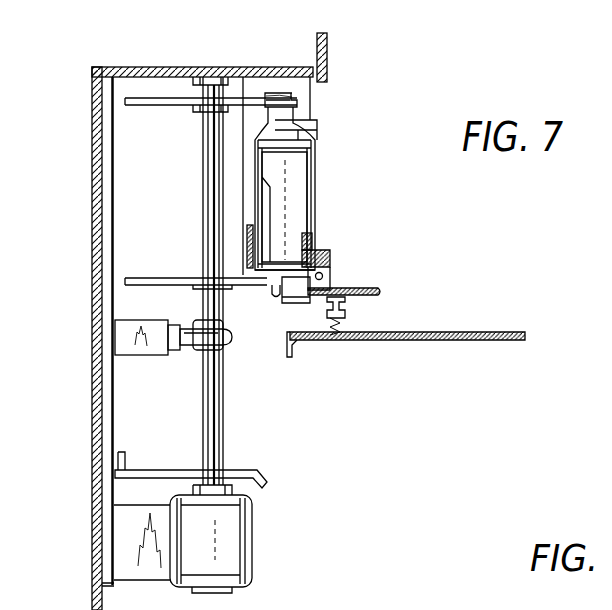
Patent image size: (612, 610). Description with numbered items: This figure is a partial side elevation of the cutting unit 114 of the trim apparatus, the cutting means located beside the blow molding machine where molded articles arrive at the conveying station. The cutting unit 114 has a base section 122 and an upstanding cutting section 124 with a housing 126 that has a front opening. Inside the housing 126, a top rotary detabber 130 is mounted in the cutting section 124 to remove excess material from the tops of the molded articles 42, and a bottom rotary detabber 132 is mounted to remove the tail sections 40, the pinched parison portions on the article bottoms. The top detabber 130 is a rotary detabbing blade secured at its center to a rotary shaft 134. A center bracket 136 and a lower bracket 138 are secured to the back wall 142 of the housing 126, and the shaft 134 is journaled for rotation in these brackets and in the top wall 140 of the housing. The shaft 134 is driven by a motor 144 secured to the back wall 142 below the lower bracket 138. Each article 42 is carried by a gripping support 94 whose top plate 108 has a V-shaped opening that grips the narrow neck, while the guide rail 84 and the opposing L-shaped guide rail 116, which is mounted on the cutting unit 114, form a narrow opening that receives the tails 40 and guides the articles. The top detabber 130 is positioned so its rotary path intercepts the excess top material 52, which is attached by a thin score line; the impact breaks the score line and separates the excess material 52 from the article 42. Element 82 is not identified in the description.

The housing 126 is at (95, 164).
The top wall 140 is at (207, 67).
The back wall 142 is at (114, 382).
The cutting section 124 is at (106, 502).
The top rotary detabber 130 is at (153, 107).
The rotary shaft 134 is at (207, 172).
The bottom rotary detabber 132 is at (155, 278).
The excess material 52 is at (287, 95).
The top plate 108 is at (308, 122).
The gripping support 94 is at (317, 142).
The article 42 is at (288, 218).
The second L-shaped guide rail 116 is at (310, 241).
The pinched portion 40 is at (273, 297).
The guide rail 84 is at (256, 302).
The support plate 82 is at (364, 300).
The base section 122 is at (469, 340).
The center bracket 136 is at (126, 335).
The lower bracket 138 is at (161, 470).
The motor 144 is at (232, 540).
The cutting unit 114 is at (268, 418).